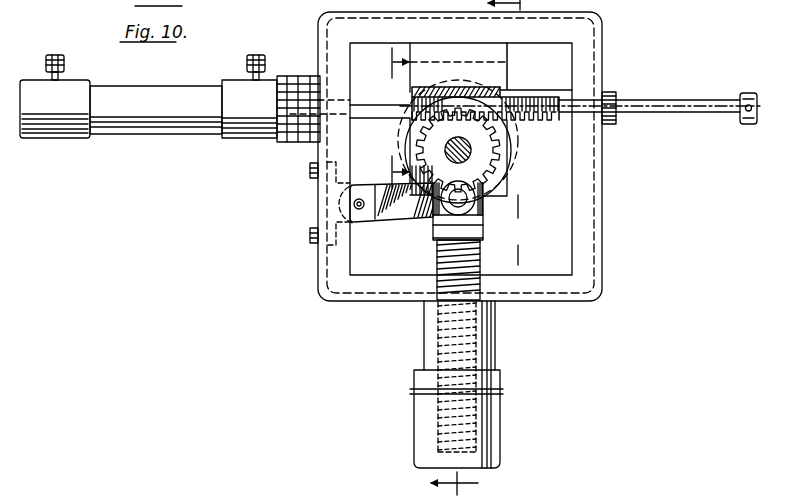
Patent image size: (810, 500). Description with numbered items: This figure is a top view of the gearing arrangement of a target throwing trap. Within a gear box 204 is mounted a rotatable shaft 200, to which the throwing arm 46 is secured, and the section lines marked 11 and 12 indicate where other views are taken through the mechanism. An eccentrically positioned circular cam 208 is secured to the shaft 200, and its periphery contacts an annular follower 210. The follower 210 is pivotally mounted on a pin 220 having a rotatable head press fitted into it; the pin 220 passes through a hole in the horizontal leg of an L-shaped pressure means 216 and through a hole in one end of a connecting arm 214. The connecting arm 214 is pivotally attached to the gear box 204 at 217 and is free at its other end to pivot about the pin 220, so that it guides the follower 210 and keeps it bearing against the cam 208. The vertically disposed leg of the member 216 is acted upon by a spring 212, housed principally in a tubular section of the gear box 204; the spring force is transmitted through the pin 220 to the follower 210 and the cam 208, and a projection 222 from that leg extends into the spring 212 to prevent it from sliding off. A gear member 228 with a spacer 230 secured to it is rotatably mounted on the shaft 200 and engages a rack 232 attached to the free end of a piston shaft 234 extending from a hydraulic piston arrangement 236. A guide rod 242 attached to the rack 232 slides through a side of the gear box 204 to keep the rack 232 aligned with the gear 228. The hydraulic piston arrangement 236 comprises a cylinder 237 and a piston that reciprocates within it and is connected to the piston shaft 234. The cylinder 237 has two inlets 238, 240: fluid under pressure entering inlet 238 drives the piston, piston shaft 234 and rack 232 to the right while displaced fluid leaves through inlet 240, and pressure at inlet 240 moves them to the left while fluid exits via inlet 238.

The gear box 204 is at (604, 57).
The eccentrically positioned circular cam 208 is at (410, 114).
The follower 210 is at (483, 222).
The spring 212 is at (486, 303).
The connecting arm 214 is at (388, 222).
The L-shaped pressure means 216 is at (443, 228).
The pivot 217 is at (354, 205).
The pin 220 is at (470, 199).
The projection 222 is at (481, 255).
The gear member 228 is at (481, 160).
The spacer 230 is at (410, 126).
The rack 232 is at (533, 96).
The piston shaft 234 is at (357, 117).
The hydraulic piston arrangement 236 is at (119, 148).
The cylinder 237 is at (176, 134).
The inlet 238 is at (53, 55).
The inlet 240 is at (258, 55).
The guide rod 242 is at (677, 107).
The rotatable shaft 200 is at (471, 150).
The section line 11 is at (496, 250).
The section line 12 is at (440, 118).
The throwing arm 46 is at (629, 495).